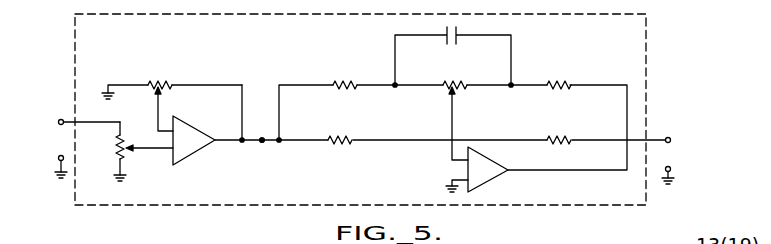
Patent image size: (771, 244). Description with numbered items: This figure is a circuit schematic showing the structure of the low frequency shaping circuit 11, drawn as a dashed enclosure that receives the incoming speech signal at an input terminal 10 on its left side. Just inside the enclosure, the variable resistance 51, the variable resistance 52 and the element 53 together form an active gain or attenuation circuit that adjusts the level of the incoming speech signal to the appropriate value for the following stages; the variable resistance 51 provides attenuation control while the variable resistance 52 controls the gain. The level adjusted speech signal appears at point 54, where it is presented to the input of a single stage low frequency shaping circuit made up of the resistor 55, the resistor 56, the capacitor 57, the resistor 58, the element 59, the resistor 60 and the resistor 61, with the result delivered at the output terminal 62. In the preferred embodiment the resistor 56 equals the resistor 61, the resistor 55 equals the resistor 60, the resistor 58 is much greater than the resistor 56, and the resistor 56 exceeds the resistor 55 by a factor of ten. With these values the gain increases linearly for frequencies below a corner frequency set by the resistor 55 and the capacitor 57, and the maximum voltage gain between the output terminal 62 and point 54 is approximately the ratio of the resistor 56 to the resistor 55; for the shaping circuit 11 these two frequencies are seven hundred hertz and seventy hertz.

The input terminal 10 is at (72, 118).
The low frequency shaping circuit 11 is at (646, 56).
The variable resistance 51 is at (129, 155).
The variable resistance 52 is at (161, 80).
The active gain or attenuation circuit element 53 is at (195, 137).
The point 54 is at (262, 143).
The resistor R55 55 is at (345, 79).
The resistor R56 56 is at (342, 135).
The capacitor C57 57 is at (449, 46).
The resistor R58 58 is at (452, 79).
The low frequency shaping circuit element 59 is at (487, 160).
The resistor R60 60 is at (557, 79).
The resistor R61 61 is at (565, 135).
The output terminal 62 is at (653, 138).